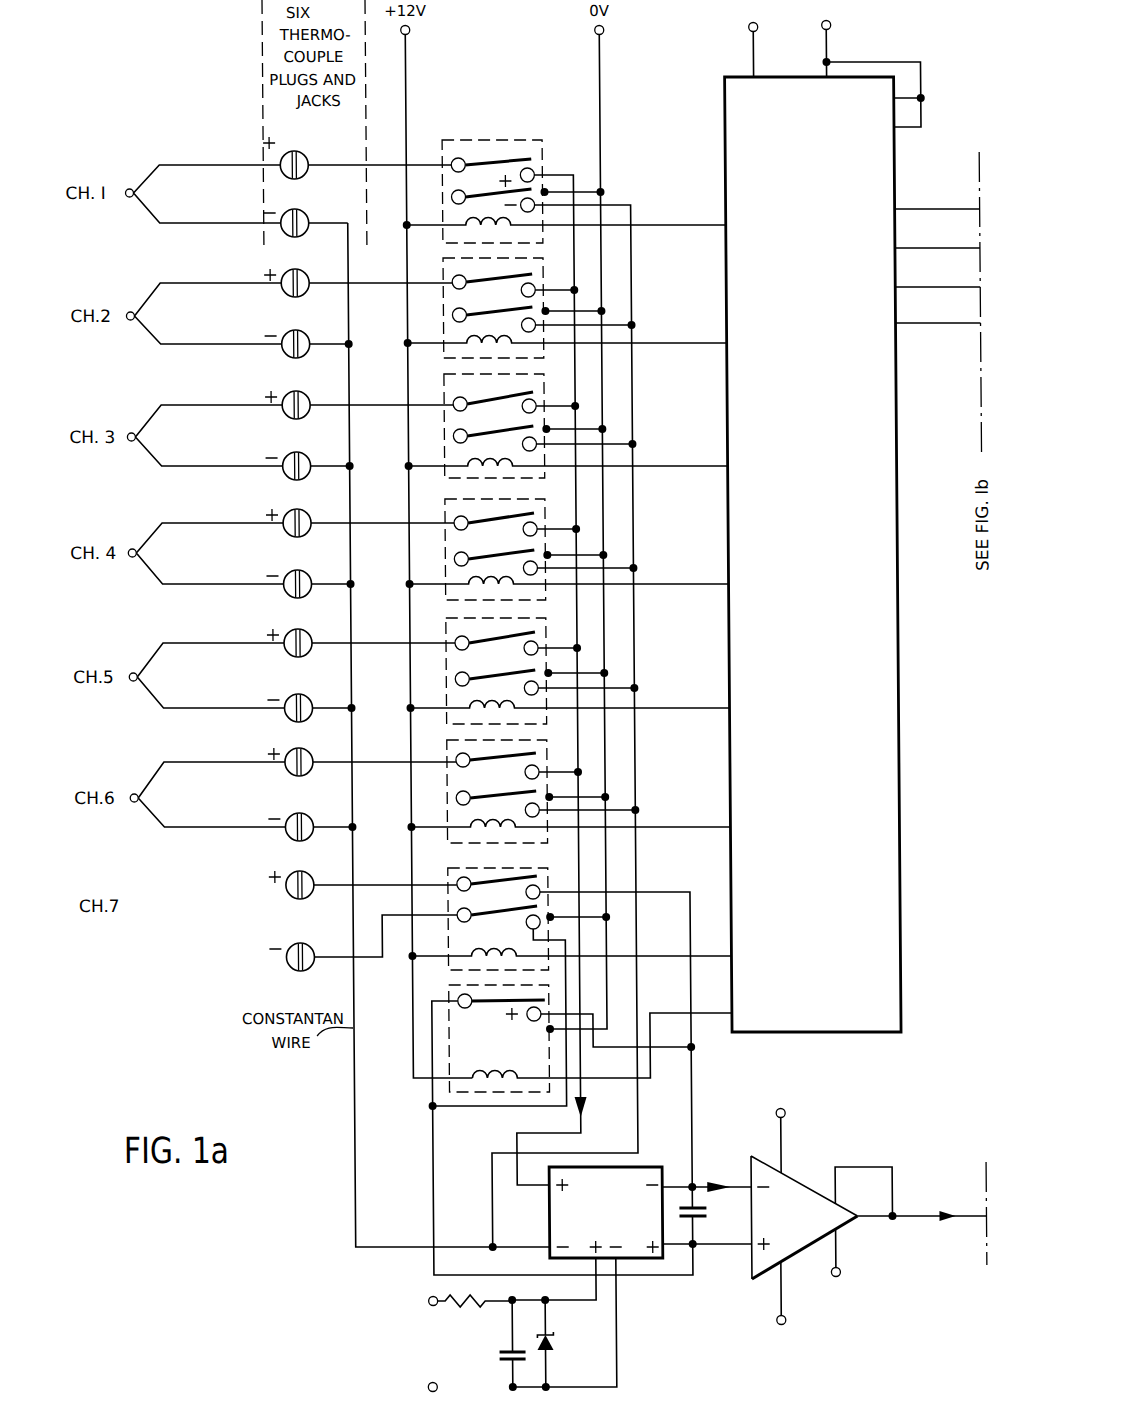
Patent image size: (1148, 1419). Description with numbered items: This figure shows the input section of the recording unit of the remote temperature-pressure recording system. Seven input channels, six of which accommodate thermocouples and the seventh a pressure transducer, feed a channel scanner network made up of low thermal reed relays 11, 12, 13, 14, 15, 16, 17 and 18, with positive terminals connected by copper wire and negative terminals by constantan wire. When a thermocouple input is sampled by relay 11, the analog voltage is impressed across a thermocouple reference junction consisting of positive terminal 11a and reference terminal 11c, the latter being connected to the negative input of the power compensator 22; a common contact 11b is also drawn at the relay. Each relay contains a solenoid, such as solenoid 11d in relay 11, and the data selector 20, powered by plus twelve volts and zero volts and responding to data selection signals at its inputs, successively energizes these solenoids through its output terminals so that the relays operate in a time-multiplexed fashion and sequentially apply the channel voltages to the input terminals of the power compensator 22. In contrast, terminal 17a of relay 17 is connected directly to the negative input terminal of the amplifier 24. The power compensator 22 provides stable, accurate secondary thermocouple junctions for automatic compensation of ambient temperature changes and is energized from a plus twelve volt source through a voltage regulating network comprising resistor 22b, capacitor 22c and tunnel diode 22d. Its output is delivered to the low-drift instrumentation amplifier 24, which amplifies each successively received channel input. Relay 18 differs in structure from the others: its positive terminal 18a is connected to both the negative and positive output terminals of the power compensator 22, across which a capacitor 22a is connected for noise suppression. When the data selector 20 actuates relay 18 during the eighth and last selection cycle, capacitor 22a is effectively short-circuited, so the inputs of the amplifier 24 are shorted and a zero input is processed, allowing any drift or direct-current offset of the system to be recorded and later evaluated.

The low thermal reed relay 11 is at (564, 187).
The positive terminal 11a is at (533, 172).
The relay common contact 11b is at (545, 190).
The reference terminal 11c is at (533, 211).
The solenoid 11d is at (475, 227).
The low thermal reed relay 12 is at (544, 268).
The low thermal reed relay 13 is at (545, 383).
The low thermal reed relay 14 is at (545, 519).
The low thermal reed relay 15 is at (545, 633).
The low thermal reed relay 16 is at (545, 758).
The low thermal reed relay 17 is at (570, 907).
The terminal 17a is at (534, 891).
The low thermal reed relay 18 is at (591, 1029).
The positive terminal 18a is at (526, 1021).
The data selector 20 is at (728, 77).
The power compensator 22 is at (634, 1167).
The capacitor 22a is at (691, 1222).
The resistor 22b is at (455, 1296).
The capacitor 22c is at (489, 1352).
The tunnel diode 22d is at (547, 1334).
The amplifier 24 is at (794, 1180).